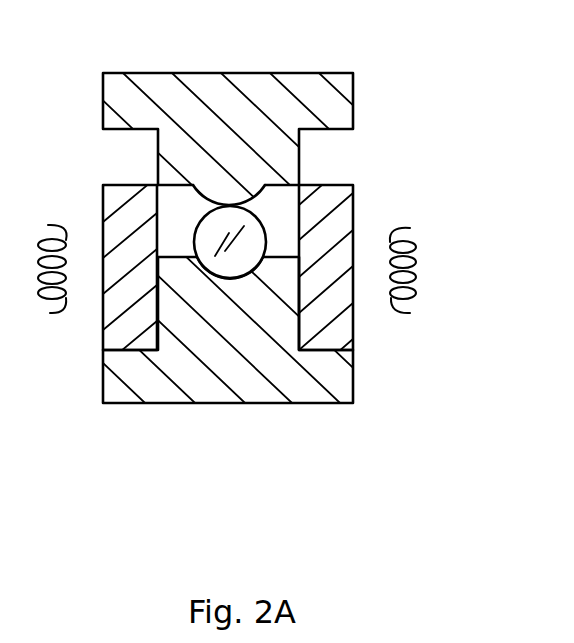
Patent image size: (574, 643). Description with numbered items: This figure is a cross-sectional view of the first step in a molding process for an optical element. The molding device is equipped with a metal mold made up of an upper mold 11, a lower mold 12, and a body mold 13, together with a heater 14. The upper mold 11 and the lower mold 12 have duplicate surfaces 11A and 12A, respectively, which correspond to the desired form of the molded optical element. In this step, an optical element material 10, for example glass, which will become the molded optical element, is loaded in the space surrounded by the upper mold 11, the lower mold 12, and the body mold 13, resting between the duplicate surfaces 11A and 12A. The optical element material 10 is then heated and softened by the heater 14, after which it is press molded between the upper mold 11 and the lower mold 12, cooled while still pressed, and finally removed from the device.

The optical element material 10 is at (240, 262).
The upper mold 11 is at (216, 97).
The duplicate surface 11A is at (250, 205).
The lower mold 12 is at (223, 395).
The duplicate surface 12A is at (213, 278).
The body mold 13 is at (328, 193).
The heater 14 is at (50, 302).